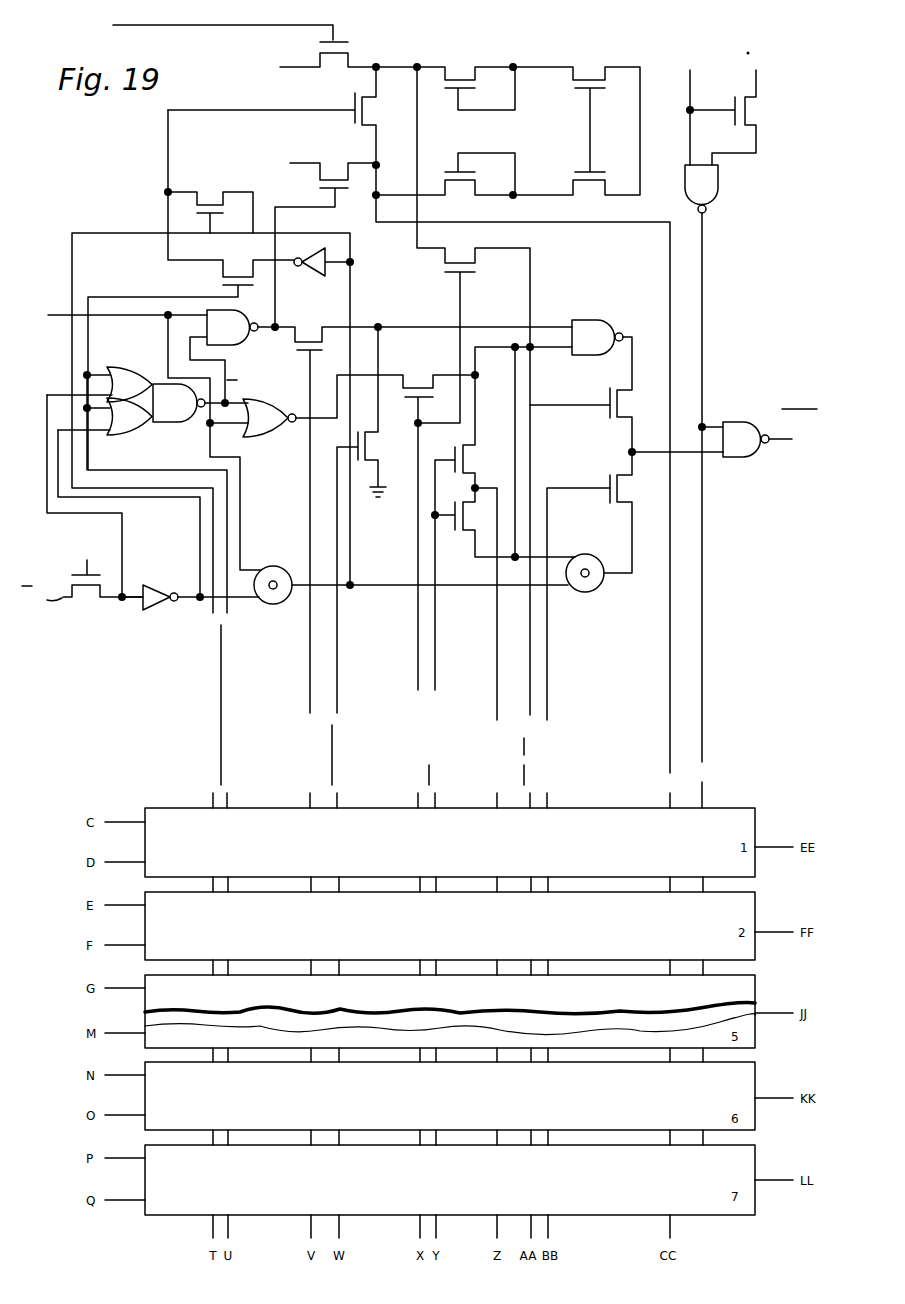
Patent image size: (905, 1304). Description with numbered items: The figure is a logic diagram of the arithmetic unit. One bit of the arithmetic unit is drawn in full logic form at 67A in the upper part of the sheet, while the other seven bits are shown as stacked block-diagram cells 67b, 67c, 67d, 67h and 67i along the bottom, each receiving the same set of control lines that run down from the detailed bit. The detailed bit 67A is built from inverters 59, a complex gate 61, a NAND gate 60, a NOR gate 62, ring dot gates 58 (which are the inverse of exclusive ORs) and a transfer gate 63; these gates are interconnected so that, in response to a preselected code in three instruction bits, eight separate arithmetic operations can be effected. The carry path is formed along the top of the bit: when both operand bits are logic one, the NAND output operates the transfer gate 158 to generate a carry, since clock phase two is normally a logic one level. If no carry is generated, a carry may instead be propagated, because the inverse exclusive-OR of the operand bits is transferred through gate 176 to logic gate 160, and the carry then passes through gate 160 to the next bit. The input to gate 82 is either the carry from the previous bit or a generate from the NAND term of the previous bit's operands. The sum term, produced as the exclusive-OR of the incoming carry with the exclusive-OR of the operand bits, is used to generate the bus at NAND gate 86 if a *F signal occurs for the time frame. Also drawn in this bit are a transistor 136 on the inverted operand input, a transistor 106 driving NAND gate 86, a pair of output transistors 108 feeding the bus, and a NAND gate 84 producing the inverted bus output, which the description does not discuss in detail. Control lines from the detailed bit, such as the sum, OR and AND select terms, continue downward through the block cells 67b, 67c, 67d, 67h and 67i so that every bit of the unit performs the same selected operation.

The one bit of the arithmetic unit 67A is at (143, 163).
The gate 82 is at (253, 46).
The logic gate 160 is at (294, 131).
The transfer gate 158 is at (325, 232).
The gate 176 is at (191, 361).
The inverters 59 is at (310, 275).
The transfer gates 63 is at (443, 265).
The NAND gates 60 is at (249, 346).
The complex gates 61 is at (133, 377).
The NOR gates 62 is at (270, 433).
The ring dot gates 58 is at (284, 562).
The transistor 136 is at (63, 594).
The transistor 106 is at (756, 112).
The NAND gate 86 is at (707, 189).
The transistor pair 108 is at (654, 453).
The NAND gate 84 is at (739, 460).
The arithmetic unit bit 67b is at (450, 842).
The arithmetic unit bit 67c is at (450, 926).
The arithmetic unit bit 67d is at (450, 1011).
The arithmetic unit bit 67h is at (450, 1096).
The arithmetic unit bit 67i is at (450, 1180).